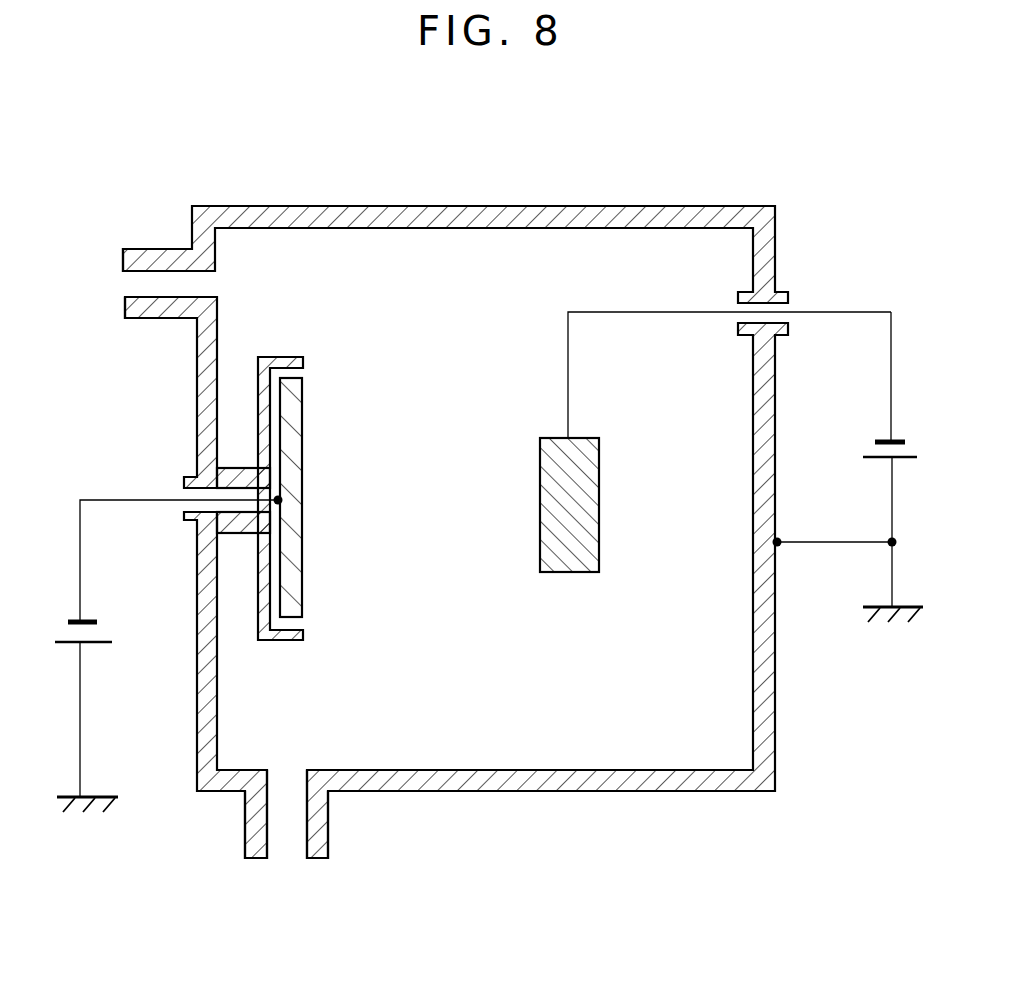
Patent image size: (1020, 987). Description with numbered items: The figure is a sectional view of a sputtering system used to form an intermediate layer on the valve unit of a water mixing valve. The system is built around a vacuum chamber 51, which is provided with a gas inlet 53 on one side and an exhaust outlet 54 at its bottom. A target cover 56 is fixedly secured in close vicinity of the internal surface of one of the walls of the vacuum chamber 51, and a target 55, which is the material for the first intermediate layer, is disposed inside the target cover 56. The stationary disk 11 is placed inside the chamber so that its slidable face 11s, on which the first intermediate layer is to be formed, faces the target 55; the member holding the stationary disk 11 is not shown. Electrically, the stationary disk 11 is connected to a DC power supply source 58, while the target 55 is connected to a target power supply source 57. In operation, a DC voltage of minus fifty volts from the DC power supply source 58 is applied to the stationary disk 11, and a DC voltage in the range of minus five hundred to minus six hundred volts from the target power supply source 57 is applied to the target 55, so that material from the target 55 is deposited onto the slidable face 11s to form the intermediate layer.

The vacuum chamber 51 is at (570, 780).
The gas inlet 53 is at (140, 285).
The exhaust outlet 54 is at (287, 840).
The target 55 is at (290, 430).
The target cover 56 is at (287, 640).
The target power supply source 57 is at (113, 630).
The DC power supply source 58 is at (863, 455).
The stationary disk 11 is at (565, 560).
The slidable face 11s is at (540, 500).